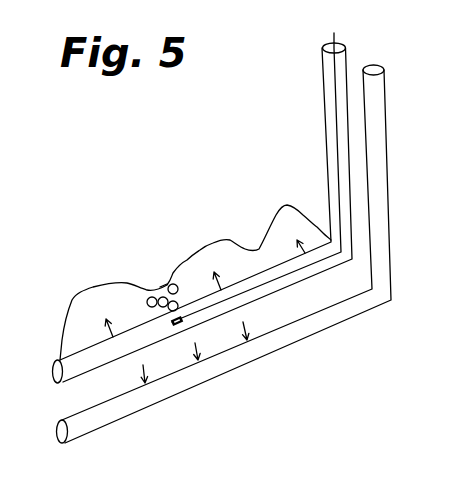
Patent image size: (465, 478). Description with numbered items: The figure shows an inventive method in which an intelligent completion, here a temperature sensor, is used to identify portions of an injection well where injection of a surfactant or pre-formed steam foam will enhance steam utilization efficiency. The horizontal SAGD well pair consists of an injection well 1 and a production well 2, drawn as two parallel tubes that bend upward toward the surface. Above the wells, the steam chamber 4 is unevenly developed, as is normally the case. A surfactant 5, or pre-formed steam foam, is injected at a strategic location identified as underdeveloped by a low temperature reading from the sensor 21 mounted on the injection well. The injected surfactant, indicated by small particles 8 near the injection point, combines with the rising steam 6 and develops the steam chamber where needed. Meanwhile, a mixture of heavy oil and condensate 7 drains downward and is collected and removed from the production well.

The injection well 1 is at (322, 60).
The production well 2 is at (385, 100).
The steam chamber 4 is at (65, 323).
The surfactant 5 is at (159, 281).
The rising steam 6 is at (197, 292).
The mixture of heavy oil and condensate 7 is at (206, 348).
The granules / particles 8 is at (170, 296).
The sensor 21 is at (166, 326).